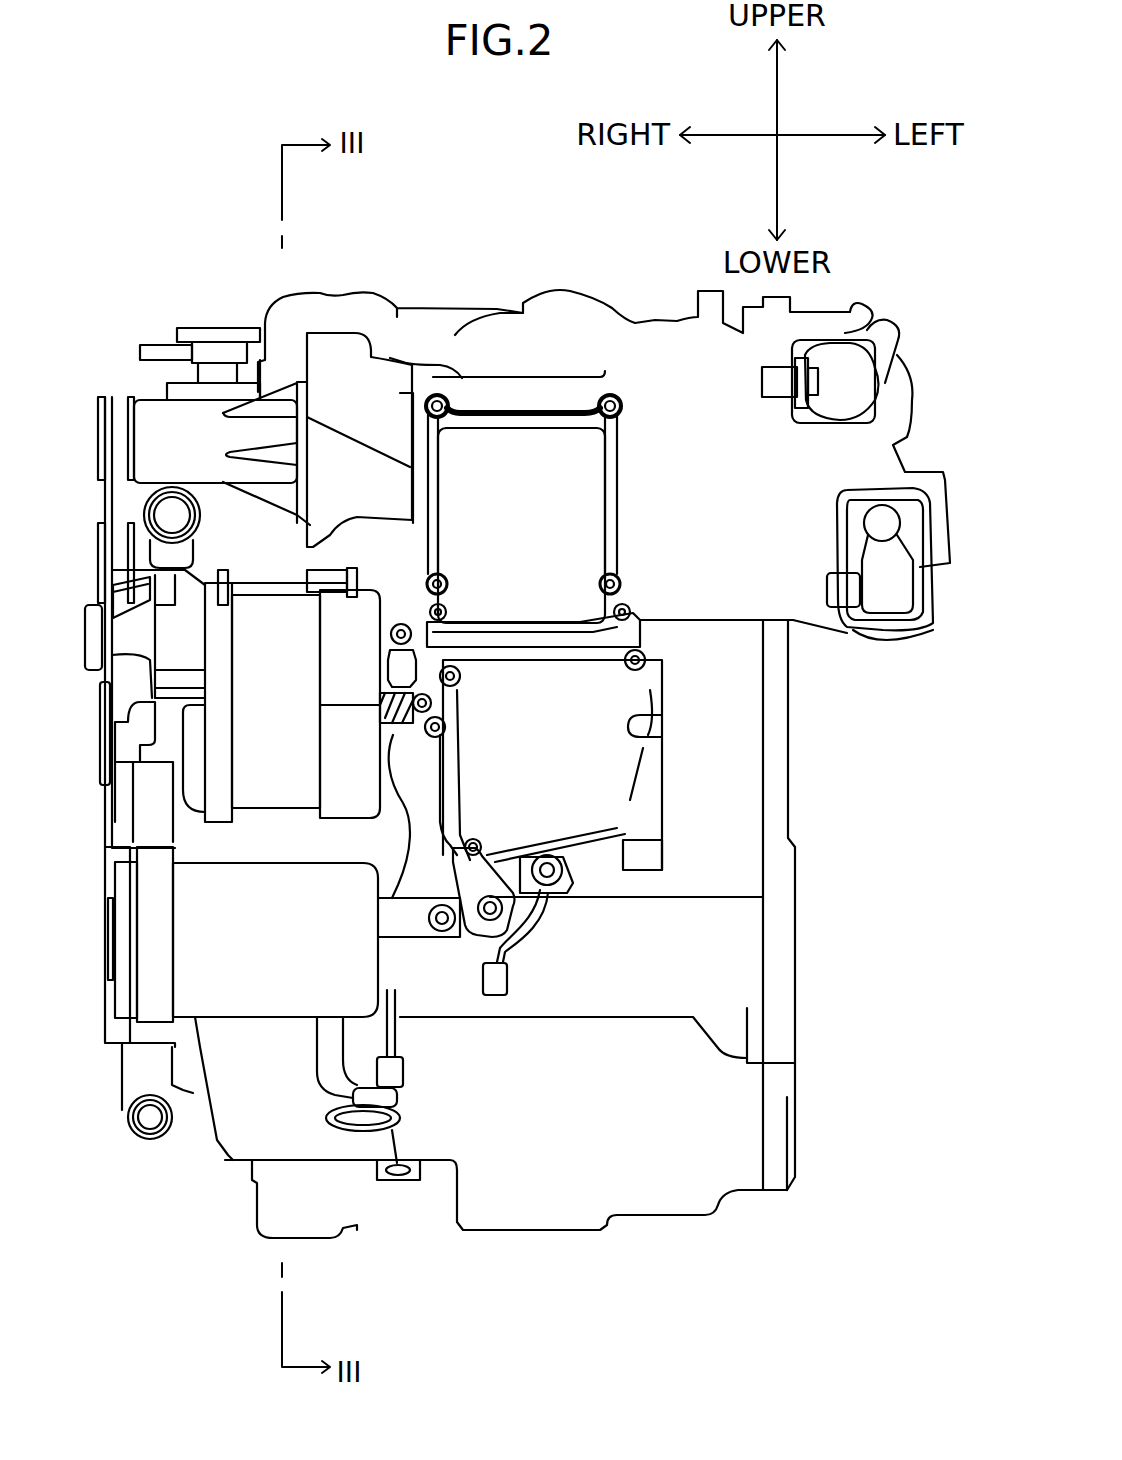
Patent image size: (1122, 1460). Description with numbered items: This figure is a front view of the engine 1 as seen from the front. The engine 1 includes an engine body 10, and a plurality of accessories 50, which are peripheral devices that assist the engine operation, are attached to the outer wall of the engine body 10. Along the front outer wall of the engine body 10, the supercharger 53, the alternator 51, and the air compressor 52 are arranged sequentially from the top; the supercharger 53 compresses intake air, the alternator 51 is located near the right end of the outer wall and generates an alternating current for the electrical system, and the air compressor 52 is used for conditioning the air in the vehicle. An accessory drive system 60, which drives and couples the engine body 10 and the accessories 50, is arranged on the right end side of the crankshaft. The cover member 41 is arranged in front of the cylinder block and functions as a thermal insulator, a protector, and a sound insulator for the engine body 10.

The engine 1 is at (521, 249).
The engine body 10 is at (806, 736).
The cover member 41 is at (603, 877).
The accessories 50 is at (228, 685).
The alternator 51 is at (267, 737).
The air compressor 52 is at (217, 943).
The supercharger 53 is at (340, 470).
The accessory drive system 60 is at (101, 513).